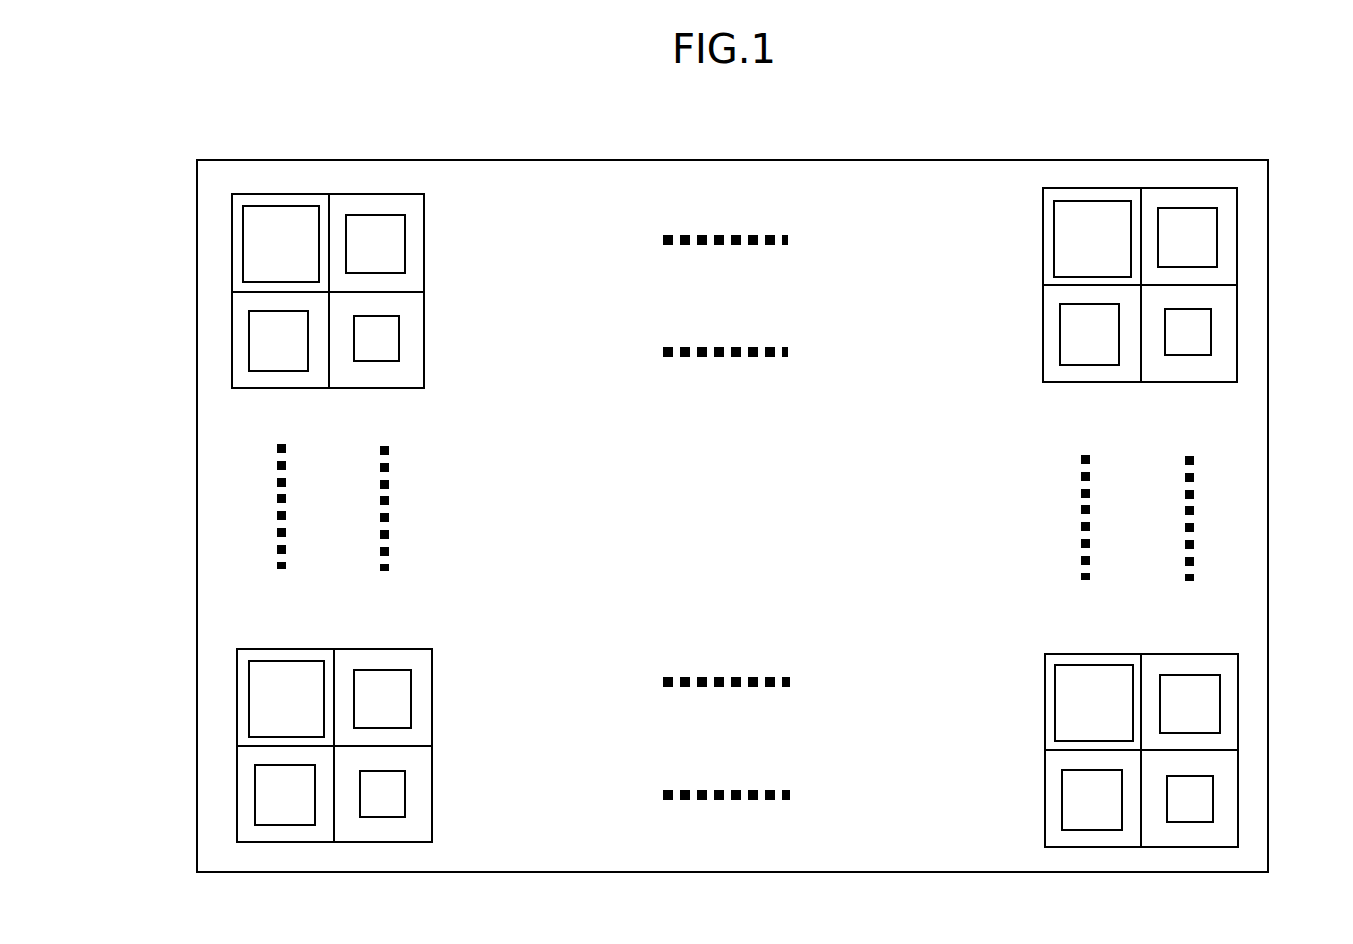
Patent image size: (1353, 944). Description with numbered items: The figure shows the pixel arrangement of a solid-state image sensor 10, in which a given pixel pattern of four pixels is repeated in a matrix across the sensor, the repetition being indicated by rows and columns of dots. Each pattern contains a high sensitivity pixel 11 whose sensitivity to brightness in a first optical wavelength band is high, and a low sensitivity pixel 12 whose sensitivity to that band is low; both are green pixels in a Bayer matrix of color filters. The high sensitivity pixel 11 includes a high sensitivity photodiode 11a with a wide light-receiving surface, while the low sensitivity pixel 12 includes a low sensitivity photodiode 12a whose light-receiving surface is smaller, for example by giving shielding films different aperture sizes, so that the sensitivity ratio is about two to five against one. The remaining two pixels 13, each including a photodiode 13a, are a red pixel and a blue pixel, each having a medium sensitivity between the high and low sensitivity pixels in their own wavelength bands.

The solid-state image sensor 10 is at (590, 160).
The high sensitivity pixel 11 is at (237, 211).
The high sensitivity photodiode 11a is at (255, 262).
The low sensitivity pixel 12 is at (417, 310).
The low sensitivity photodiode 12a is at (390, 352).
The pixel 13 is at (238, 306).
The photodiode 13a is at (257, 357).